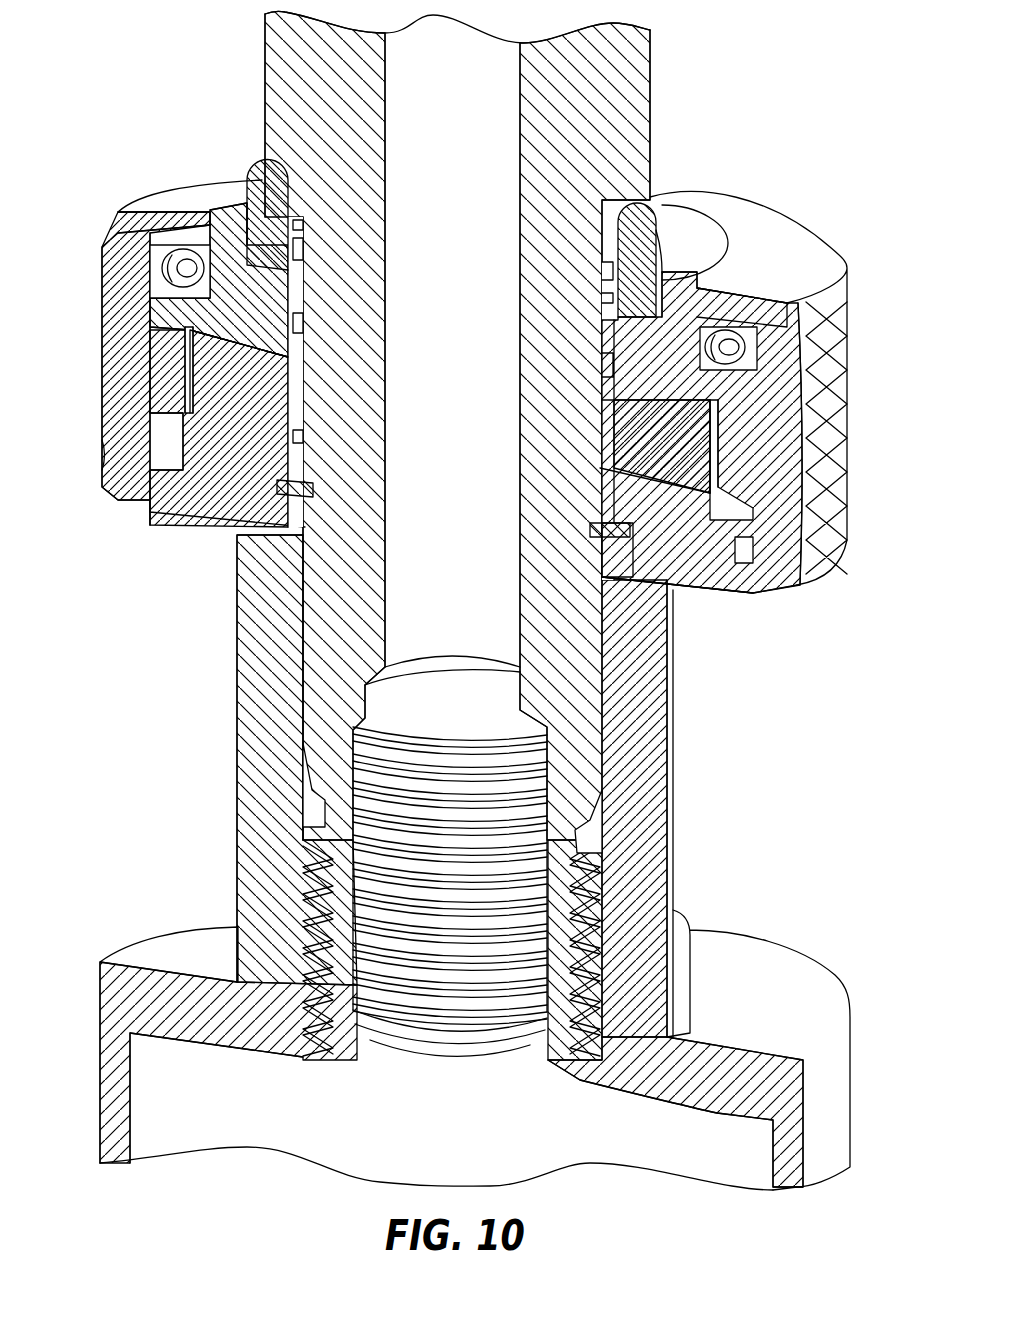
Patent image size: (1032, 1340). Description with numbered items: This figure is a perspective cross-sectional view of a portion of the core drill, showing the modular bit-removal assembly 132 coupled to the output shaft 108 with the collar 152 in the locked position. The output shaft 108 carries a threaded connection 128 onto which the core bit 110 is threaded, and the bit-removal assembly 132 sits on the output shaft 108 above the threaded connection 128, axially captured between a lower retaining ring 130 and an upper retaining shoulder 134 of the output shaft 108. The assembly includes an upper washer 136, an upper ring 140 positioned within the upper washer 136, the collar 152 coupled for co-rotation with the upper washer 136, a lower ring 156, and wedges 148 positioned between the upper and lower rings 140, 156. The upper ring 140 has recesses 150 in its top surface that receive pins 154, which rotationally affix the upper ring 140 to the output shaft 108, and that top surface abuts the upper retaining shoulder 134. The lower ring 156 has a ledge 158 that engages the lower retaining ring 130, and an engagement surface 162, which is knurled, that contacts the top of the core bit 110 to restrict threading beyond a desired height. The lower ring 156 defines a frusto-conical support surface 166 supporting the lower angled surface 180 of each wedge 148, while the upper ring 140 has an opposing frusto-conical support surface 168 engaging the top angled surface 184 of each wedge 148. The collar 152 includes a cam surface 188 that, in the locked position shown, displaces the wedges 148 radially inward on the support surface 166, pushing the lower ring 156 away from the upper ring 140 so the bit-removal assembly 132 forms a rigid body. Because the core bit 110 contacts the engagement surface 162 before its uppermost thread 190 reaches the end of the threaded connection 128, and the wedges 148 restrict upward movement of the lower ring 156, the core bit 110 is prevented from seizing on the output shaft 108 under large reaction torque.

The output shaft 108 is at (610, 120).
The core bit 110 is at (640, 773).
The threaded connection 128 is at (603, 896).
The lower retaining ring 130 is at (262, 560).
The bit-removal assembly 132 is at (878, 228).
The upper retaining shoulder 134 is at (247, 233).
The upper washer 136 is at (770, 232).
The upper ring 140 is at (687, 237).
The wedges 148 is at (200, 380).
The recesses 150 is at (632, 310).
The collar 152 is at (110, 450).
The pins 154 is at (208, 247).
The lower ring 156 is at (160, 517).
The ledge 158 is at (738, 553).
The engagement surface 162 is at (700, 590).
The frusto-conical support surface 166 is at (220, 413).
The opposing frusto-conical support surface 168 is at (233, 348).
The lower angled surface 180 is at (813, 513).
The top angled surface 184 is at (700, 365).
The cam surface 188 is at (185, 408).
The uppermost thread 190 is at (323, 797).